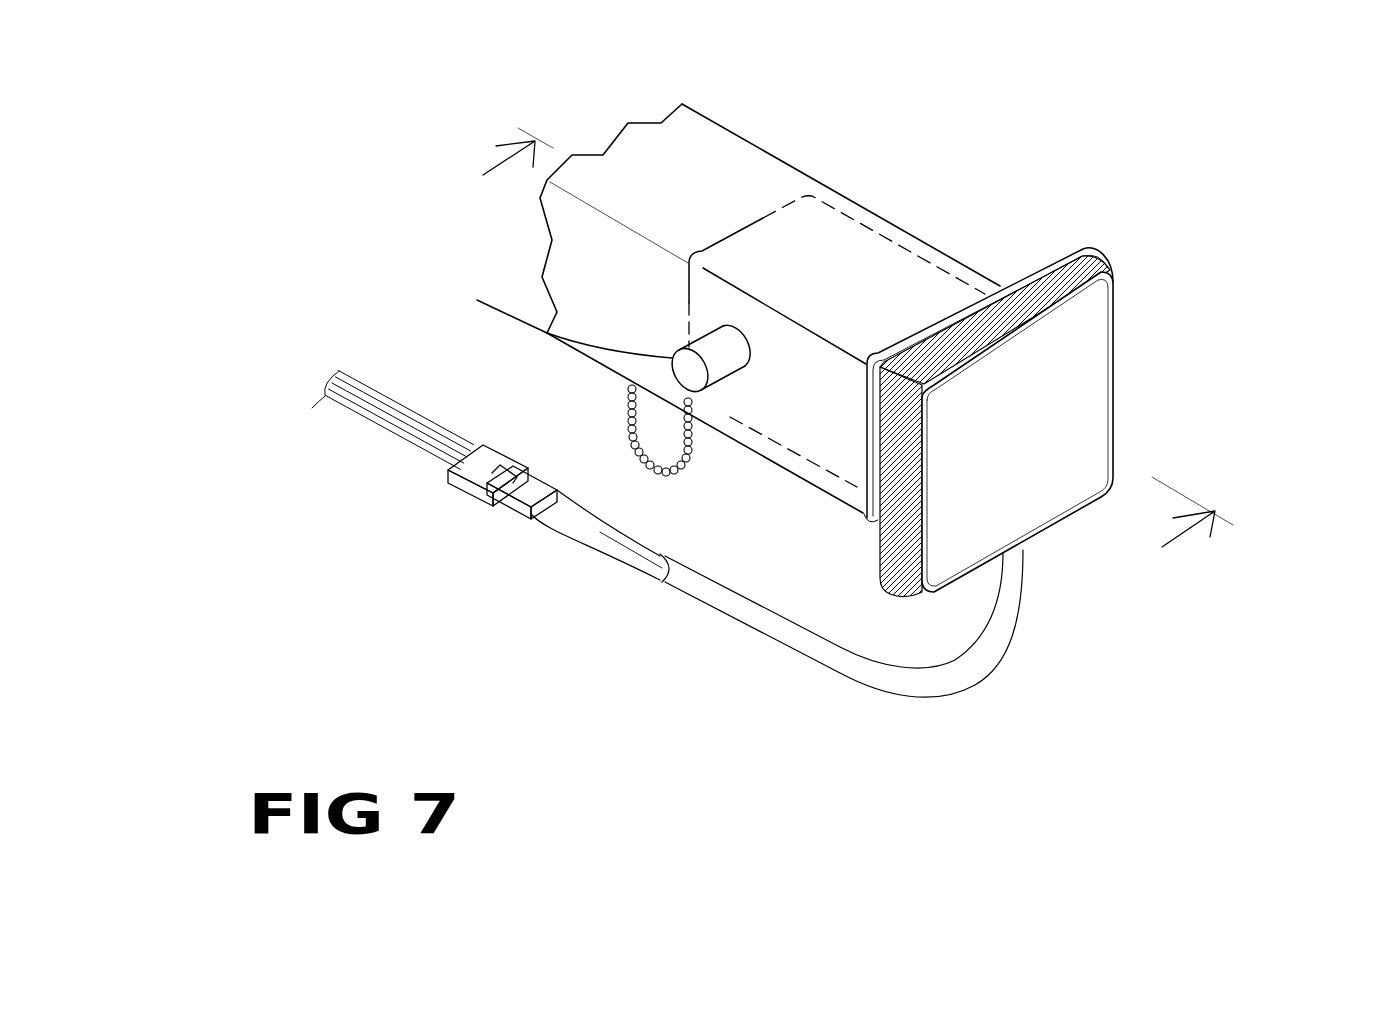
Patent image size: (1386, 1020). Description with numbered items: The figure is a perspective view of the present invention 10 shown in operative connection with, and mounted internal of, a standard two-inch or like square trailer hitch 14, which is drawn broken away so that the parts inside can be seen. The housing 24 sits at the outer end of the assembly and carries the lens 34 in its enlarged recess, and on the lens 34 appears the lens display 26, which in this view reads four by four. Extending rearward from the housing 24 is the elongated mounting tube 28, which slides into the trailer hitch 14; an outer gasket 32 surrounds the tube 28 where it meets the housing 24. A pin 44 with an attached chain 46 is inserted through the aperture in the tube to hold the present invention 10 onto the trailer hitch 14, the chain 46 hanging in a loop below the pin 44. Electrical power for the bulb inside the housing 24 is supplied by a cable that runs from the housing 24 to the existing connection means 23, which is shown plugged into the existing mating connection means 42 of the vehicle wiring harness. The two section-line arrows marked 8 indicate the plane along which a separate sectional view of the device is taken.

The section line 8- 8 is at (844, 354).
The present invention 10 is at (1180, 283).
The trailer hitch 14 is at (607, 150).
The connection means 23 is at (500, 503).
The housing 24 is at (1098, 258).
The lens display 26 is at (1098, 365).
The elongated mounting tube 28 is at (896, 248).
The outer gasket 32 is at (863, 512).
The lens 34 is at (1057, 503).
The mating connection means 42 is at (463, 488).
The pin 44 is at (493, 310).
The chain 46 is at (633, 438).